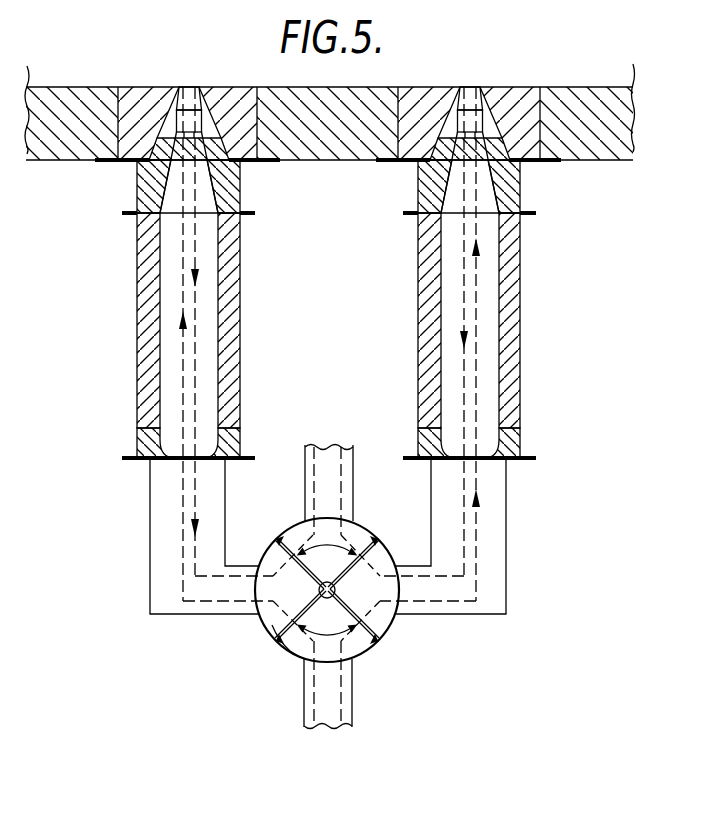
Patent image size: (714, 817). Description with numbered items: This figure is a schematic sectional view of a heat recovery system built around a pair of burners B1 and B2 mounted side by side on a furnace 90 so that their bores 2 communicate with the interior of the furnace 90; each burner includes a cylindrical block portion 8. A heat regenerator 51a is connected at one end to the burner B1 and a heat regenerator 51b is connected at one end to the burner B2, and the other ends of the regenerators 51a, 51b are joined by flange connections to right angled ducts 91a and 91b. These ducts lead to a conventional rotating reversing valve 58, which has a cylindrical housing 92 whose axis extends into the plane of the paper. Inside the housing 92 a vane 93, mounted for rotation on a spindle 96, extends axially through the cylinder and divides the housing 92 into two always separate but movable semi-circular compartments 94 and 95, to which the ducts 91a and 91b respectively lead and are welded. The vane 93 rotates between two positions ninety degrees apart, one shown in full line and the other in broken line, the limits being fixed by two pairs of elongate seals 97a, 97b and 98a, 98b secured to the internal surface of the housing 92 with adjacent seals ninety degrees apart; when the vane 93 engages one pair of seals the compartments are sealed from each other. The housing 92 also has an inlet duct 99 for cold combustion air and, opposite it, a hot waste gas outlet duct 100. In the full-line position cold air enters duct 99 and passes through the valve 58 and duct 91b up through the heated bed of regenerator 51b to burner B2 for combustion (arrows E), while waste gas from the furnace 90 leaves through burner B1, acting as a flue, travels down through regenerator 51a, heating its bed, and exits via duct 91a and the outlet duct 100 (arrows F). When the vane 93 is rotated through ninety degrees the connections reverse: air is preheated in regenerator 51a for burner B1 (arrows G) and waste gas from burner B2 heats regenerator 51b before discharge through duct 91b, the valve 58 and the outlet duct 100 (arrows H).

The furnace 90 is at (569, 93).
The cylindrical block portion 8 is at (225, 92).
The bore 2 is at (168, 180).
The burner B1 is at (232, 182).
The burner B2 is at (514, 182).
The heat regenerator 51a is at (140, 318).
The heat regenerator 51b is at (516, 330).
The arrows F is at (195, 360).
The arrows H is at (465, 385).
The arrows G is at (183, 497).
The arrows E is at (480, 499).
The hot waste gas outlet duct 100 is at (327, 452).
The inlet duct 99 is at (353, 714).
The right angled duct 91a is at (173, 606).
The right angled duct 91b is at (463, 611).
The rotating reversing valve 58 is at (367, 662).
The spindle 96 is at (336, 590).
The elongate seal 97a is at (283, 640).
The elongate seal 97b is at (383, 538).
The elongate seal 98a is at (273, 538).
The elongate seal 98b is at (390, 636).
The compartment 94 is at (258, 621).
The compartment 95 is at (390, 588).
The vane 93 is at (287, 644).
The cylindrical housing 92 is at (293, 662).